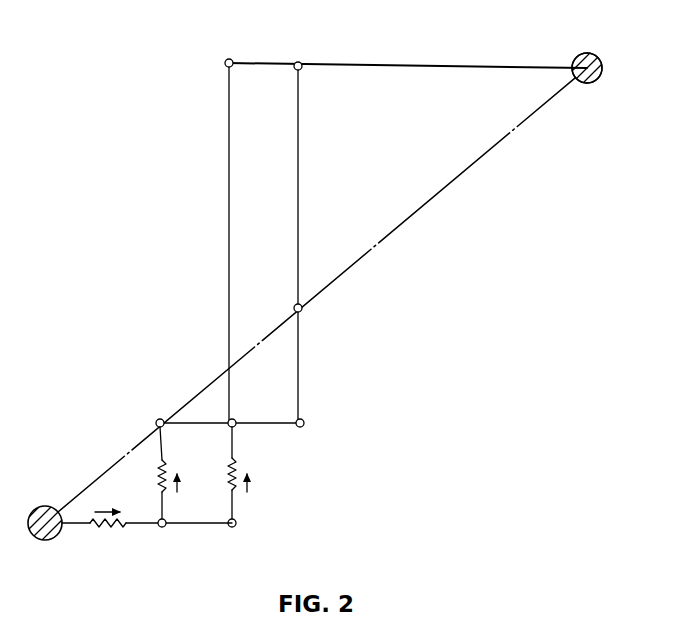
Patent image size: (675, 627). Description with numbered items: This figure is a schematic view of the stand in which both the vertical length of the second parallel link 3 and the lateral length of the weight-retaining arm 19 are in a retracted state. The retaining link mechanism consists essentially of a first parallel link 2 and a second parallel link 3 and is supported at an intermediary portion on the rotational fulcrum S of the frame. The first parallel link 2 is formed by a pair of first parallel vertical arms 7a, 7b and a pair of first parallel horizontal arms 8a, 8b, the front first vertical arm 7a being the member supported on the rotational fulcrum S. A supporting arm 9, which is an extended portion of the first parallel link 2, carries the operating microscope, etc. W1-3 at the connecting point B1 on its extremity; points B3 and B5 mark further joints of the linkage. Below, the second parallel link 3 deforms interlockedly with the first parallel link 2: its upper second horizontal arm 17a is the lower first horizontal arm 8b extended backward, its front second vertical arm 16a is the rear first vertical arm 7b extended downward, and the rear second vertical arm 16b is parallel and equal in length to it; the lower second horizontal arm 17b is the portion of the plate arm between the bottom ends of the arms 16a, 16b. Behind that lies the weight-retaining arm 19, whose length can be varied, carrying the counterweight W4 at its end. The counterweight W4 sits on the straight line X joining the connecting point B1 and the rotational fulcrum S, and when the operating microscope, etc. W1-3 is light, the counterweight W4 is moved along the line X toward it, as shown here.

The first parallel link 2 is at (254, 233).
The second parallel link 3 is at (177, 442).
The front first vertical arm 7a is at (299, 168).
The rear first vertical arm 7b is at (229, 166).
The first parallel horizontal arm 8a is at (263, 63).
The lower first horizontal arm 8b is at (280, 427).
The supporting arm 9 is at (462, 66).
The front second vertical arm 16a is at (235, 506).
The rear second vertical arm 16b is at (157, 509).
The upper second horizontal arm 17a is at (205, 423).
The lower second horizontal arm 17b is at (195, 530).
The weight-retaining arm 19 is at (138, 530).
The connecting point B1 is at (580, 54).
The third bearing point B3 is at (302, 63).
The fifth bearing point B5 is at (304, 427).
The rotational fulcrum S is at (303, 312).
The straight line X is at (448, 188).
The operating microscope, etc. W1-3 is at (588, 84).
The counterweight W4 is at (48, 540).